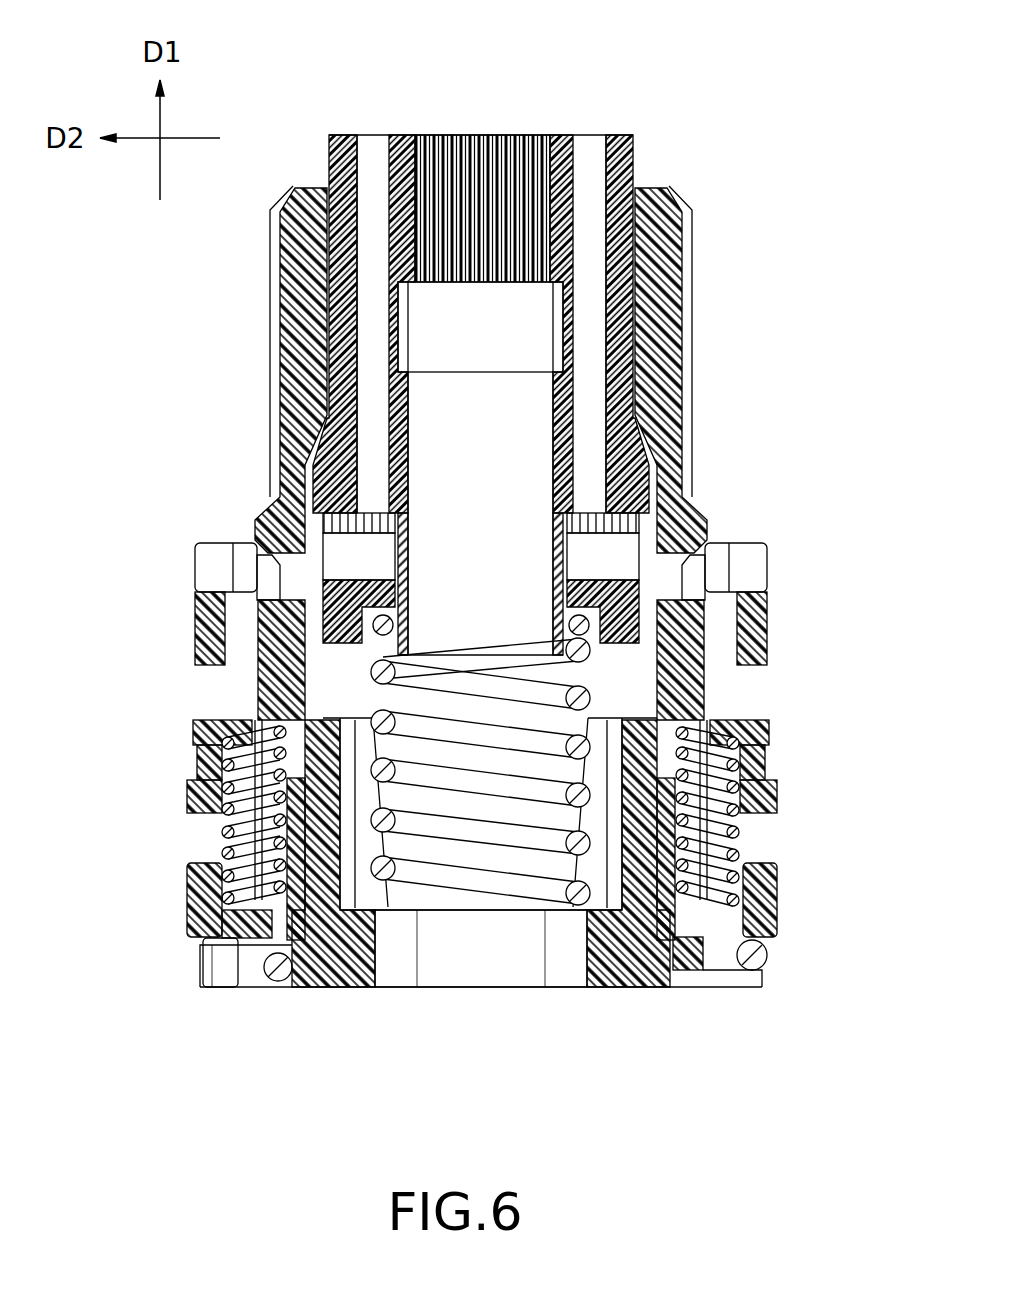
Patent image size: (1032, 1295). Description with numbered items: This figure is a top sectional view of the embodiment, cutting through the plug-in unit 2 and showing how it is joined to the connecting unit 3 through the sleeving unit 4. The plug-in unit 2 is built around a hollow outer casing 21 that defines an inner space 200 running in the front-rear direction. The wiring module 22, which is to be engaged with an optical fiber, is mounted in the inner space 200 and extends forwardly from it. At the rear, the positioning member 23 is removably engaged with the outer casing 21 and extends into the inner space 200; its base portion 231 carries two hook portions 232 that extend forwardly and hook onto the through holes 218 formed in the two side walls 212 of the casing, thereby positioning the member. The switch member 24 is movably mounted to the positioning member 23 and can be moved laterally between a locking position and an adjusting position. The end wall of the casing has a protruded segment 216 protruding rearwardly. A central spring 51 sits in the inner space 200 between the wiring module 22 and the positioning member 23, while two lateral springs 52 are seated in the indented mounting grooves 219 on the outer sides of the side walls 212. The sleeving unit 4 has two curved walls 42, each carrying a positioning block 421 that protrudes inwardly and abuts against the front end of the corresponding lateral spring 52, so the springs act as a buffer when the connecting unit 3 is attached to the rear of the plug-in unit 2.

The plug-in unit 2 is at (722, 162).
The inner space 200 is at (328, 222).
The wiring module 22 is at (630, 158).
The side walls 212 is at (283, 284).
The outer casing 21 is at (712, 338).
The sleeving unit 4 is at (792, 545).
The curved walls 42 is at (203, 608).
The positioning block 421 is at (235, 722).
The through hole 218 is at (305, 725).
The lateral springs 52 is at (220, 828).
The mounting groove 219 is at (235, 860).
The hook portions 232 is at (228, 895).
The connecting unit 3 is at (182, 932).
The switch member 24 is at (770, 955).
The positioning member 23 is at (327, 1012).
The central spring 51 is at (578, 895).
The protruded segment 216 is at (683, 955).
The base portion 231 is at (620, 990).